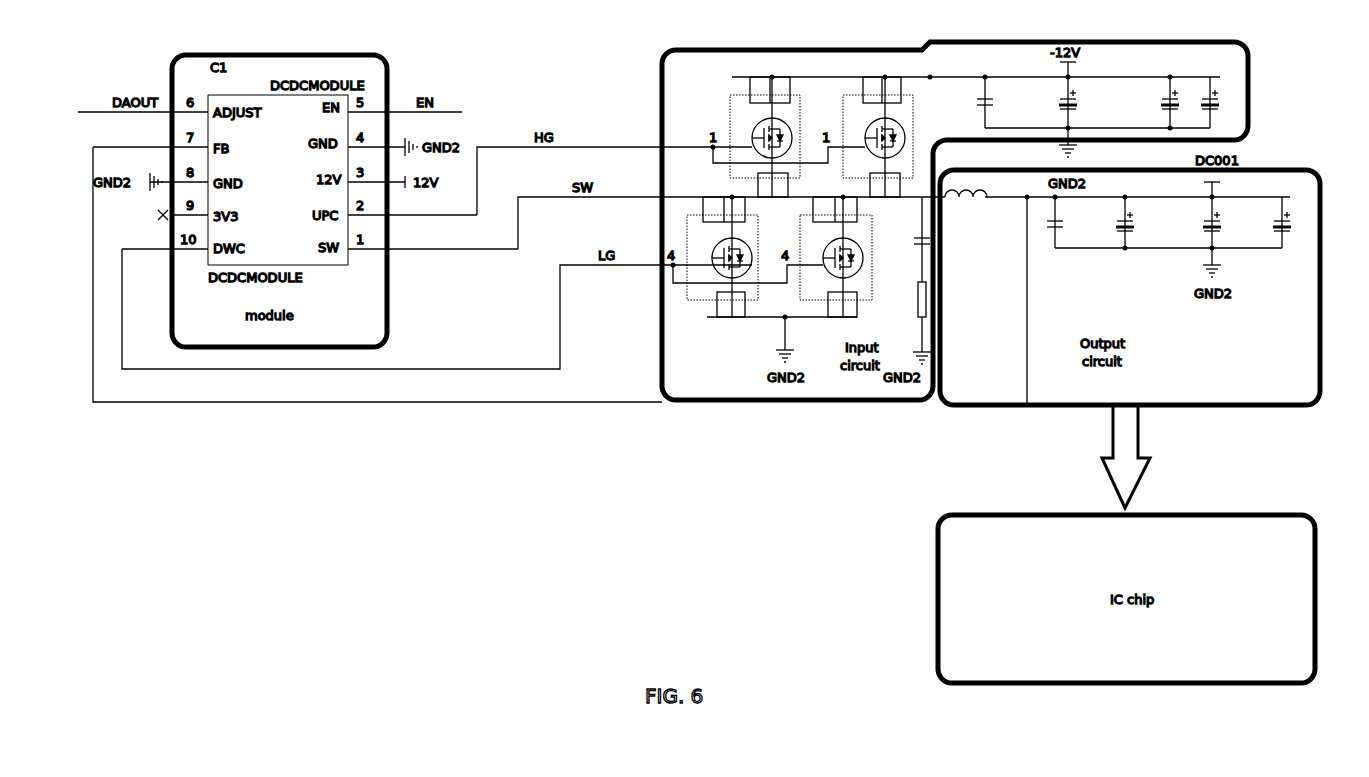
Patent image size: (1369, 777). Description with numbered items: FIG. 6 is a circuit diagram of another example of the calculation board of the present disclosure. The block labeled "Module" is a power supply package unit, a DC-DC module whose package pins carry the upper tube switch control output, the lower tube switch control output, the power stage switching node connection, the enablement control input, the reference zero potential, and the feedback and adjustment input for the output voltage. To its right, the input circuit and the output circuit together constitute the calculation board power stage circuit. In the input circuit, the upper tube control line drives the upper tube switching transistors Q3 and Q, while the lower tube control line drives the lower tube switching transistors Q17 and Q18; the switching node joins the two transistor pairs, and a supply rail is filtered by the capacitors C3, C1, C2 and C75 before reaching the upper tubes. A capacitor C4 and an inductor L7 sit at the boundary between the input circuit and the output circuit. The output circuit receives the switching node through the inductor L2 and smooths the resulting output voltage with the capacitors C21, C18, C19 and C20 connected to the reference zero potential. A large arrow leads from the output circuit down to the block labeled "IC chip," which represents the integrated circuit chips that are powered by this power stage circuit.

The capacitor C1 is at (1078, 102).
The capacitor C2 is at (1179, 102).
The capacitor C3 is at (995, 102).
The capacitor C4 is at (934, 240).
The capacitor C75 is at (1222, 102).
The capacitor C18 is at (1139, 222).
The capacitor C19 is at (1226, 222).
The capacitor C20 is at (1294, 222).
The capacitor C21 is at (1070, 222).
The transistor Q3 is at (776, 137).
The transistor Q is at (884, 137).
The transistor Q17 is at (737, 257).
The transistor Q18 is at (849, 257).
The inductor L2 is at (966, 186).
The inductor L7 is at (936, 299).